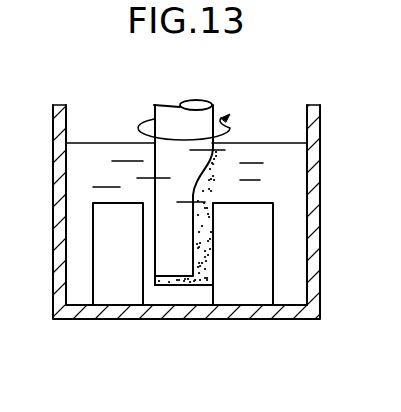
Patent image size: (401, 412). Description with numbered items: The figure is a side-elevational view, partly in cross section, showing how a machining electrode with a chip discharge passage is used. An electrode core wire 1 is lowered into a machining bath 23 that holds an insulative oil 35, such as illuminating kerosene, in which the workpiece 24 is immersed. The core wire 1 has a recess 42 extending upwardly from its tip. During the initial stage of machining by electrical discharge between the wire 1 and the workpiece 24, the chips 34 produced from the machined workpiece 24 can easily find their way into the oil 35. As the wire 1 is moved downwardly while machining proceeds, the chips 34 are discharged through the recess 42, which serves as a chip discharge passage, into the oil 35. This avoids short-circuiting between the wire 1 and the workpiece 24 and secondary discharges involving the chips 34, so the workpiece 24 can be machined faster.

The electrode core wire 1 is at (162, 235).
The machining bath 23 is at (313, 293).
The workpiece 24 is at (250, 288).
The chips 34 is at (195, 283).
The insulative oil 35 is at (260, 153).
The recess 42 is at (203, 233).